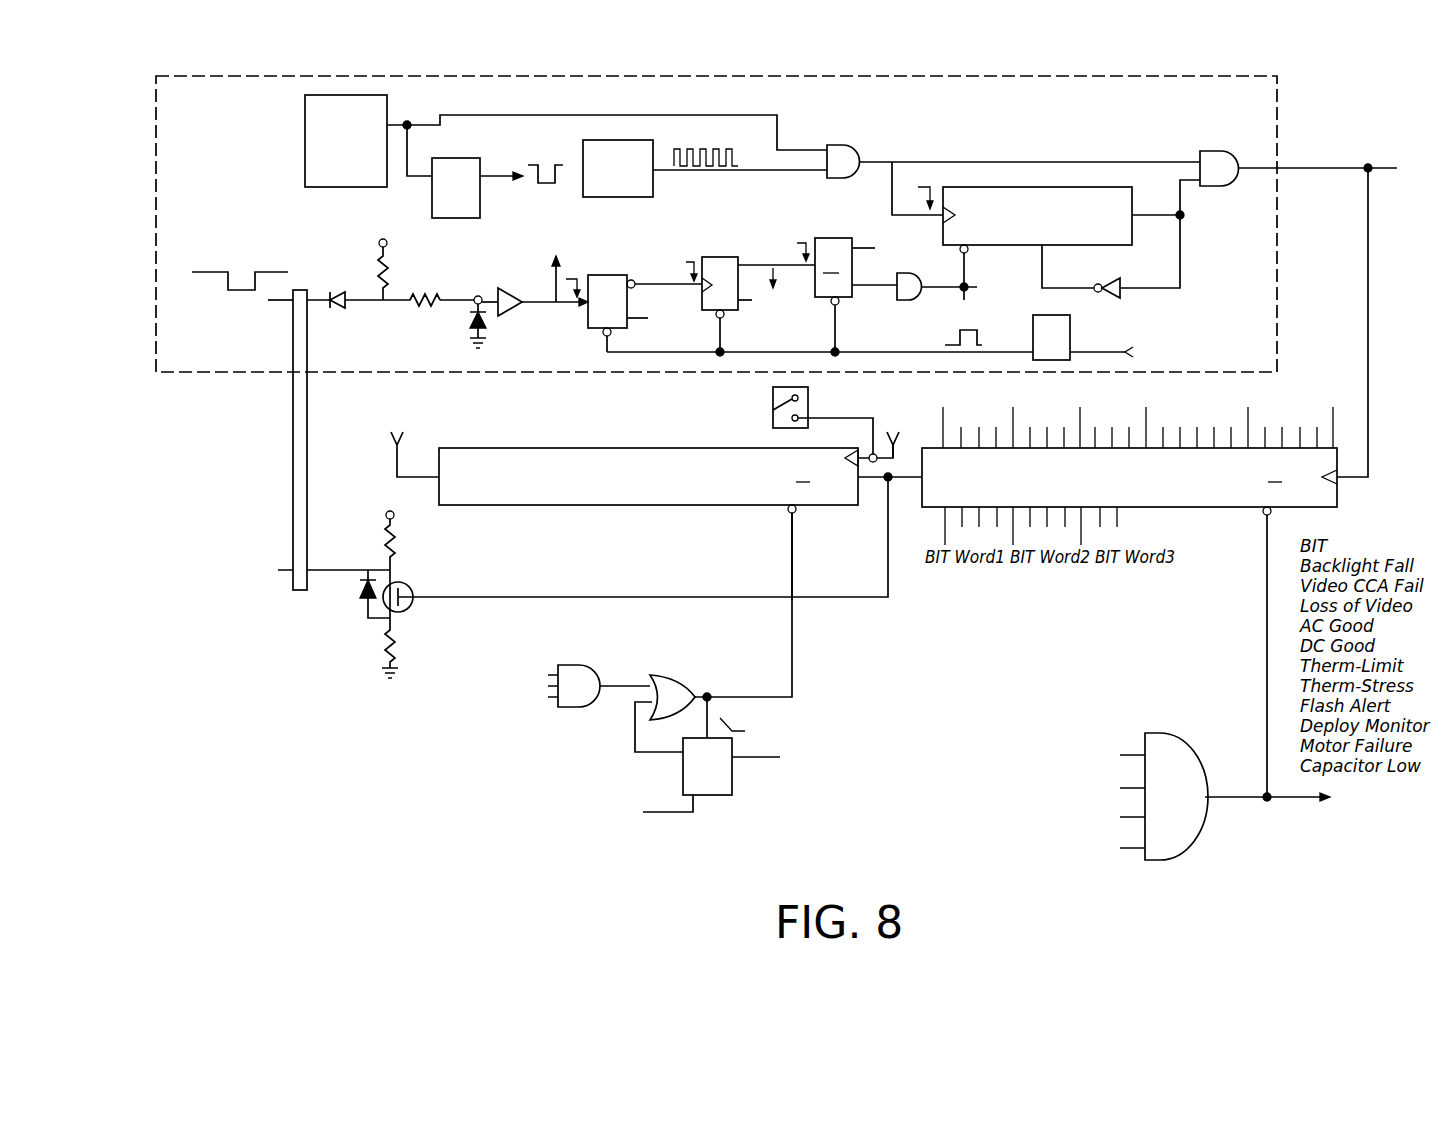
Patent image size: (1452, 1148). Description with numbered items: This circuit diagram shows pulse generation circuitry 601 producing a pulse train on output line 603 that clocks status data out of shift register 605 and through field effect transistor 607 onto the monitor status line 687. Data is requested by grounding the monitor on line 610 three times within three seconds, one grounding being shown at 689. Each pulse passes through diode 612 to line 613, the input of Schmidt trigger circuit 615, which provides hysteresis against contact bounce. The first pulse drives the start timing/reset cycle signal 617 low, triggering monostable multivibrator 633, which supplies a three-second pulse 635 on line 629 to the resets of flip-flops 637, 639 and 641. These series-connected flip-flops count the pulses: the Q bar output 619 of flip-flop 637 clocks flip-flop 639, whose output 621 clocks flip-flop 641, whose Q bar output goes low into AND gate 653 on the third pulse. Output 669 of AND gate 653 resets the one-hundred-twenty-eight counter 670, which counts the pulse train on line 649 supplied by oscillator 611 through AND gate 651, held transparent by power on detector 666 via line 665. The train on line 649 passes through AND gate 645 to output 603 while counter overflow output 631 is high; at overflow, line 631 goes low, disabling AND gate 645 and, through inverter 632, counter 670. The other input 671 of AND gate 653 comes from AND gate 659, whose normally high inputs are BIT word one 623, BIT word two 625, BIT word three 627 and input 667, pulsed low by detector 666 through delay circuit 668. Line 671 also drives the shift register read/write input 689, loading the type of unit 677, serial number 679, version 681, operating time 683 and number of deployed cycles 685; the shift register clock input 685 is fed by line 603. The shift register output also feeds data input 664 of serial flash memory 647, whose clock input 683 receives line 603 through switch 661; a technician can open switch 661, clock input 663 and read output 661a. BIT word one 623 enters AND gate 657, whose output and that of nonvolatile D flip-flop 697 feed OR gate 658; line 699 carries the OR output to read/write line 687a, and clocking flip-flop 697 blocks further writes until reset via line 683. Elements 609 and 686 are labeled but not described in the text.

The pulse generation circuitry 601 is at (1250, 138).
The pulse generator output line 603 is at (1302, 170).
The shift register 605 is at (1206, 490).
The field effect transistor 607 is at (407, 607).
The zener diode 609 is at (355, 572).
The monitor on line 610 is at (272, 303).
The oscillator 611 is at (641, 198).
The diode 612 is at (340, 308).
The Schmidt trigger input line 613 is at (478, 296).
The Schmidt type trigger circuit 615 is at (512, 314).
The start timing/reset cycle signal 617 is at (836, 290).
The Q bar output of flip-flop 637 619 is at (643, 281).
The output line of flip-flop 639 621 is at (812, 302).
The BIT word 1 623 is at (972, 553).
The BIT word 2 625 is at (1041, 553).
The BIT word 3 627 is at (1107, 553).
The flip-flop reset line 629 is at (792, 352).
The counter overflow output 631 is at (1172, 210).
The inverter 632 is at (1110, 280).
The non-retriggerable mono-stable multi-vibrator 633 is at (1108, 343).
The three-second pulse 635 is at (985, 332).
The first flip-flop 637 is at (612, 308).
The second flip-flop 639 is at (718, 257).
The third flip-flop 641 is at (824, 238).
The AND gate 645 is at (1217, 160).
The serial flash memory 647 is at (737, 494).
The counter clock line 649 is at (920, 162).
The AND gate 651 is at (862, 143).
The AND gate 653 is at (915, 296).
The AND gate 657 is at (572, 680).
The OR gate 658 is at (663, 688).
The AND gate 659 is at (1193, 837).
The switch 661 is at (808, 392).
The serial flash memory output 661a is at (407, 441).
The serial flash memory clock input 663 is at (901, 426).
The serial flash memory data input 664 is at (863, 483).
The power on detector output line 665 is at (607, 132).
The power on detection circuit 666 is at (322, 184).
The AND gate 659 input 667 is at (797, 514).
The delay circuit 668 is at (448, 200).
The counter reset line 669 is at (968, 262).
The 128 counter 670 is at (550, 162).
The output of AND gate 659 671 is at (890, 276).
The type of unit 677 is at (978, 425).
The serial number of the unit 679 is at (1055, 425).
The version of the unit 681 is at (1118, 425).
The operating time of the unit 683 is at (812, 462).
The number of deployed cycles 685 is at (1299, 425).
The shift register clock input 686 is at (1340, 487).
The monitor status pin 687 is at (282, 567).
The read/write line of the serial flash memory 687a is at (793, 512).
The grounding of the monitor on line 689 is at (212, 272).
The nonvolatile D type flip-flop 697 is at (733, 760).
The OR gate output line 699 is at (735, 697).